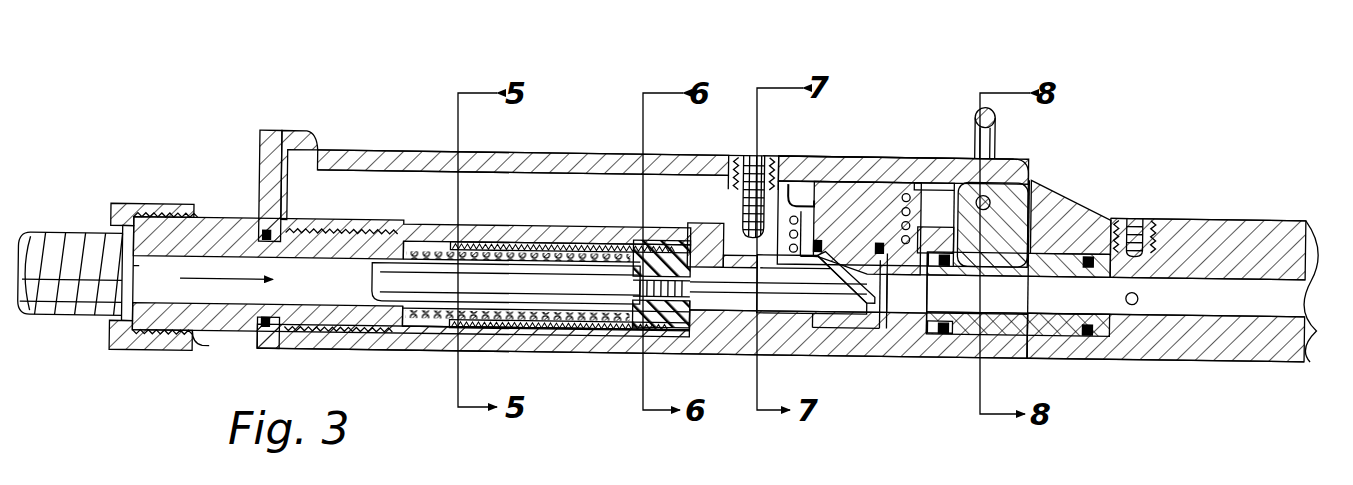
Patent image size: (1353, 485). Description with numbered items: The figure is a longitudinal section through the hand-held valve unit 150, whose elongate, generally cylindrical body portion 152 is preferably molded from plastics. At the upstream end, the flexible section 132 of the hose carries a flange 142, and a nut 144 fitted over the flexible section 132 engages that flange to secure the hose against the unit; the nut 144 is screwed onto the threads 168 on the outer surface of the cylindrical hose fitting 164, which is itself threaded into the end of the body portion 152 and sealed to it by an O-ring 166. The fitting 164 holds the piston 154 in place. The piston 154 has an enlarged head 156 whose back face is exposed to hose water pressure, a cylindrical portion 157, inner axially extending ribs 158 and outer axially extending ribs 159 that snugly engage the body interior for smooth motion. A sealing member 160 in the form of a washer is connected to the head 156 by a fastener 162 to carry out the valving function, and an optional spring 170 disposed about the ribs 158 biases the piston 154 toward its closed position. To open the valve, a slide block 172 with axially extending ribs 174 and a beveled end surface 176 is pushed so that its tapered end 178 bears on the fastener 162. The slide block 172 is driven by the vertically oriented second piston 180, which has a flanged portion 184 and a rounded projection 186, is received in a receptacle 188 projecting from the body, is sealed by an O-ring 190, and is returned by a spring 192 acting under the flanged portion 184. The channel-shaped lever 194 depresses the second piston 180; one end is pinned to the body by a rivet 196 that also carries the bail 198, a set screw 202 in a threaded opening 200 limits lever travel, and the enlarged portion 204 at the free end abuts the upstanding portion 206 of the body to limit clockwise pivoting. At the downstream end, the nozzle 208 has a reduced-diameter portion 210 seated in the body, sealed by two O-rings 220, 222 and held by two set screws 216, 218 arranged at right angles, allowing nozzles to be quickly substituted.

The flexible section 132 is at (60, 240).
The nut 144 is at (128, 208).
The cylindrical hose fitting 164 is at (230, 222).
The flange 142 is at (203, 271).
The threads 168 is at (204, 347).
The O-ring 166 is at (267, 333).
The upstanding portion 206 is at (263, 138).
The enlarged portion 204 is at (320, 133).
The lever 194 is at (545, 151).
The axially extending ribs 158 is at (385, 268).
The spring 170 is at (482, 242).
The piston 154 is at (515, 270).
The fastener 162 is at (595, 240).
The sealing member 160 is at (660, 245).
The set screw 202 is at (742, 225).
The cylindrical portion 157 is at (490, 322).
The body portion 152 is at (556, 330).
The enlarged head 156 is at (600, 330).
The axially extending ribs 159 is at (695, 330).
The threaded opening 200 is at (775, 150).
The receptacle 188 is at (800, 190).
The rounded projection 186 is at (856, 190).
The tapered end 178 is at (702, 300).
The slide block 172 is at (790, 302).
The axially extending ribs 174 is at (830, 302).
The beveled end surface 176 is at (870, 300).
The second piston 180 is at (866, 230).
The flanged portion 184 is at (905, 186).
The spring 192 is at (885, 243).
The O-ring 190 is at (905, 293).
The O-ring 220 is at (945, 268).
The reduced-diameter portion 210 is at (1036, 282).
The O-ring 222 is at (1086, 268).
The set screw 218 is at (1142, 300).
The rivet 196 is at (988, 200).
The bail 198 is at (1000, 112).
The hand-held valve unit 150 is at (1135, 132).
The set screw 216 is at (1134, 216).
The nozzle 208 is at (1240, 206).